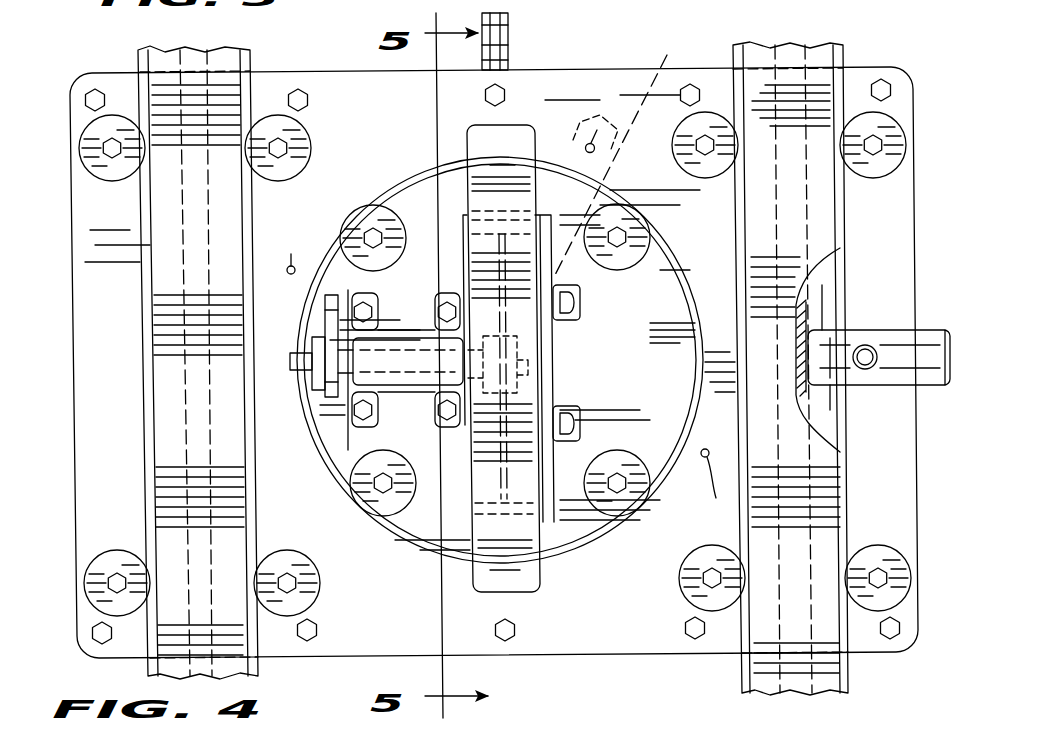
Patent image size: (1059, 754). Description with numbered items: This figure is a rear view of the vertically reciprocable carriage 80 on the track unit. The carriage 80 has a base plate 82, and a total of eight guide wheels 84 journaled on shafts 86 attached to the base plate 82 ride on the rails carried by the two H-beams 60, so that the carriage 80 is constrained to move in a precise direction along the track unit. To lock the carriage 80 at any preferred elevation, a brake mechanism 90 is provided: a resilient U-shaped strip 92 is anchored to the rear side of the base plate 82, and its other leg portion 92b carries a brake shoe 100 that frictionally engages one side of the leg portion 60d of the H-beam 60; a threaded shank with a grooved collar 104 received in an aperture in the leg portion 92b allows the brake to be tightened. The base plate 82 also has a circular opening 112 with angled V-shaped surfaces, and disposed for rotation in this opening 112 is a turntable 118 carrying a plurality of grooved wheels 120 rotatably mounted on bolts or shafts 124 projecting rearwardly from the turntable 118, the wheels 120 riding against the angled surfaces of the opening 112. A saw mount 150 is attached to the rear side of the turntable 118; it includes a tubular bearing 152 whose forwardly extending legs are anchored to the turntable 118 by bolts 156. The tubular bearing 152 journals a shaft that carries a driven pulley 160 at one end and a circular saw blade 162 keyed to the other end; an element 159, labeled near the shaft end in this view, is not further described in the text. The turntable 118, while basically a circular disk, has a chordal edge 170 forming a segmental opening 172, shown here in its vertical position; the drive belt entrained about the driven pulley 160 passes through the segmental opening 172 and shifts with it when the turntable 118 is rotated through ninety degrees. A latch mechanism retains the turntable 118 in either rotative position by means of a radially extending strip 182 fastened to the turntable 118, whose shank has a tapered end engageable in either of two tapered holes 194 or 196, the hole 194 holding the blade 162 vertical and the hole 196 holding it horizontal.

The H-beam 60 is at (262, 60).
The leg portion 60d is at (820, 298).
The carriage 80 is at (852, 60).
The base plate 82 is at (556, 93).
The guide wheel 84 is at (82, 170).
The shaft 86 is at (300, 583).
The brake mechanism 90 is at (934, 328).
The U-shaped strip 92 is at (933, 388).
The leg portion 92b is at (890, 330).
The brake shoe 100 is at (825, 425).
The grooved collar 104 is at (870, 372).
The circular opening 112 is at (556, 560).
The turntable 118 is at (664, 333).
The wheel 120 is at (402, 246).
The bolt 124 is at (618, 232).
The saw mount 150 is at (421, 394).
The tubular bearing 152 is at (403, 352).
The bolt 156 is at (447, 292).
The shaft 159 is at (290, 362).
The driven pulley 160 is at (318, 345).
The circular saw blade 162 is at (508, 410).
The chordal edge 170 is at (340, 468).
The segmental opening 172 is at (333, 420).
The strip 182 is at (620, 151).
The tapered hole 194 is at (595, 128).
The tapered hole 196 is at (498, 377).